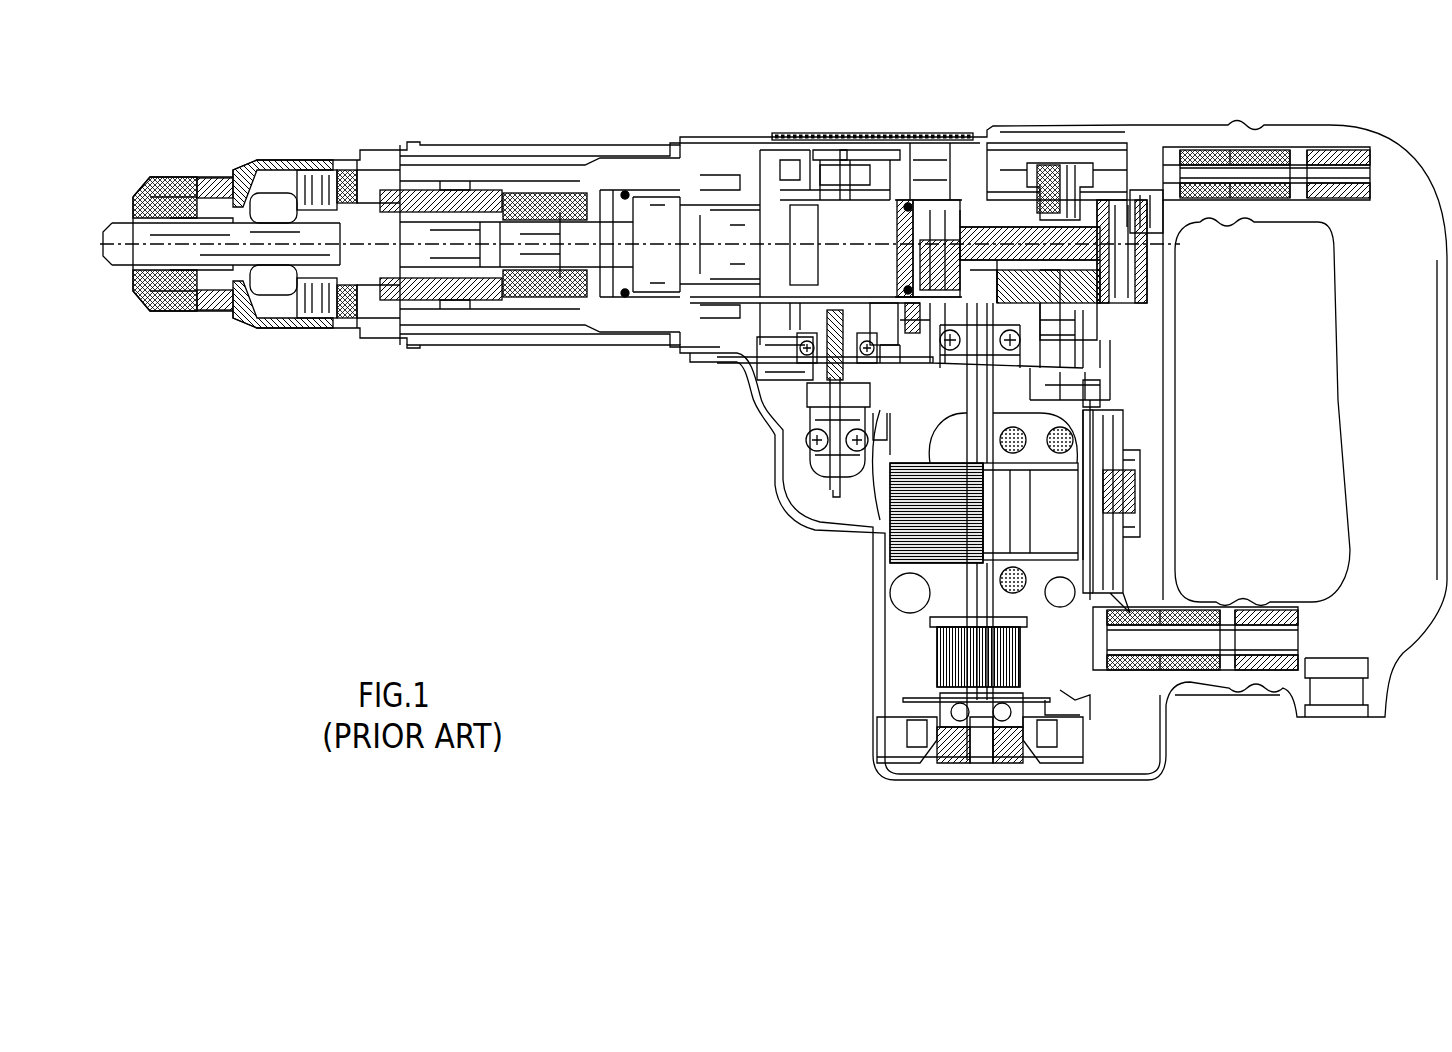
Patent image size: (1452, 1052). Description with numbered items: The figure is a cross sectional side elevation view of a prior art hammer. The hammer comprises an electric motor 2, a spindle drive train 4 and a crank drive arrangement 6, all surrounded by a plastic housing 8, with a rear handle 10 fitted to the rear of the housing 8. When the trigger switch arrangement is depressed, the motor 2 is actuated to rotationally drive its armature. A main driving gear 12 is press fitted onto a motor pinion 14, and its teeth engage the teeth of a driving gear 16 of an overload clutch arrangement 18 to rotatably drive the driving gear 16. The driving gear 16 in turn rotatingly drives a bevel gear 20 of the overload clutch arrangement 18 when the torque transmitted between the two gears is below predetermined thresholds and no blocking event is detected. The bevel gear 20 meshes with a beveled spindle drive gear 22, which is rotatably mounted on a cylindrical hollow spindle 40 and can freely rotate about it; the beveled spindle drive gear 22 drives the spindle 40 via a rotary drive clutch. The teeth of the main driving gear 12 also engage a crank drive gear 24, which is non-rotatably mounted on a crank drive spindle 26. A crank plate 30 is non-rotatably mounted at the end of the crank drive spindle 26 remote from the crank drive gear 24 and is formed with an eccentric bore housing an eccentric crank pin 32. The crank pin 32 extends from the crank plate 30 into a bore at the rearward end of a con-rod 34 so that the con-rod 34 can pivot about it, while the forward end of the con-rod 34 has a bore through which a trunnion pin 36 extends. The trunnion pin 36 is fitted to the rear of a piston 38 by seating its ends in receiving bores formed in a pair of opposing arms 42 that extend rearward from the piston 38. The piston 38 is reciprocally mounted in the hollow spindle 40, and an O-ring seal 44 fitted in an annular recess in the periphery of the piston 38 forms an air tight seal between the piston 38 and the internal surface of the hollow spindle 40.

The electric motor 2 is at (953, 590).
The spindle drive train 4 is at (917, 380).
The crank drive arrangement 6 is at (1058, 220).
The plastic housing 8 is at (783, 493).
The rear handle 10 is at (1414, 422).
The main driving gear 12 is at (810, 388).
The motor pinion 14 is at (990, 402).
The driving gear 16 is at (767, 377).
The overload clutch arrangement 18 is at (840, 358).
The bevel gear 20 is at (802, 340).
The beveled spindle drive gear 22 is at (800, 338).
The crank drive gear 24 is at (1105, 372).
The crank drive spindle 26 is at (1087, 320).
The crank plate 30 is at (1043, 227).
The eccentric crank pin 32 is at (1128, 254).
The con-rod 34 is at (993, 227).
The trunnion pin 36 is at (917, 233).
The piston 38 is at (880, 207).
The cylindrical hollow spindle 40 is at (817, 208).
The opposing arms 42 is at (912, 288).
The O-ring seal 44 is at (910, 203).